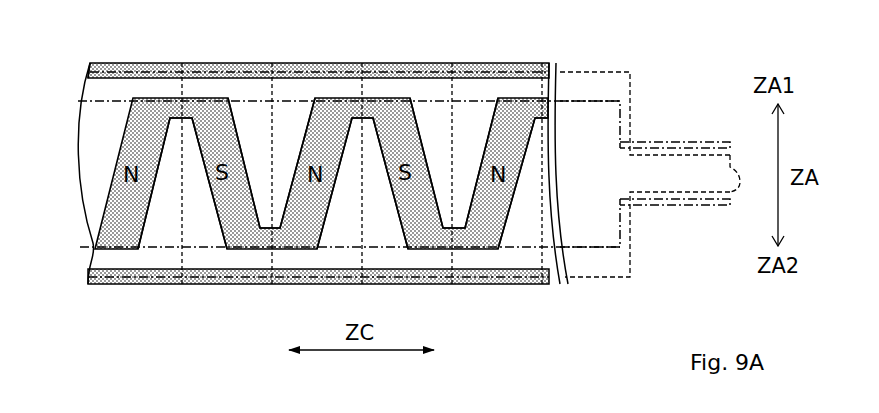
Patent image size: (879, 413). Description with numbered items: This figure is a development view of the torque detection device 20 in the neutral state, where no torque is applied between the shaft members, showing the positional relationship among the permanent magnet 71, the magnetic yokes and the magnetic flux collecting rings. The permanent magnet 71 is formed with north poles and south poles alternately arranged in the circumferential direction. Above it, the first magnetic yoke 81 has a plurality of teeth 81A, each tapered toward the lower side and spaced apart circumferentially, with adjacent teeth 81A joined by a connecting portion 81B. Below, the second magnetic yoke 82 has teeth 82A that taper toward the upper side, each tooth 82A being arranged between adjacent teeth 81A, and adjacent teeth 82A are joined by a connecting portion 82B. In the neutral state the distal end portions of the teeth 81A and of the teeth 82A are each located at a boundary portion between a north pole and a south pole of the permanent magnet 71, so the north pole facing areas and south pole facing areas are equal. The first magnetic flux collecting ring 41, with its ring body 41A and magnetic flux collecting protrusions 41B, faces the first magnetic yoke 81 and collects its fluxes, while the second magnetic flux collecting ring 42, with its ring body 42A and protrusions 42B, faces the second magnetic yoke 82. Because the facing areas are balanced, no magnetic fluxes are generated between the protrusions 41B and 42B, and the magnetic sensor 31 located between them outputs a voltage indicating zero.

The torque detection device 20 is at (458, 46).
The permanent magnet 71 is at (125, 62).
The first magnetic yoke 81 is at (224, 71).
The teeth 81A is at (100, 182).
The connecting portion 81B is at (162, 88).
The second magnetic yoke 82 is at (423, 276).
The teeth 82A is at (190, 144).
The connecting portion 82B is at (115, 266).
The first magnetic flux collecting ring 41 is at (578, 68).
The ring body 41A is at (602, 78).
The magnetic flux collecting protrusions 41B is at (658, 142).
The second magnetic flux collecting ring 42 is at (580, 278).
The ring body 42A is at (600, 271).
The magnetic flux collecting protrusions 42B is at (658, 208).
The magnetic sensor 31 is at (747, 185).